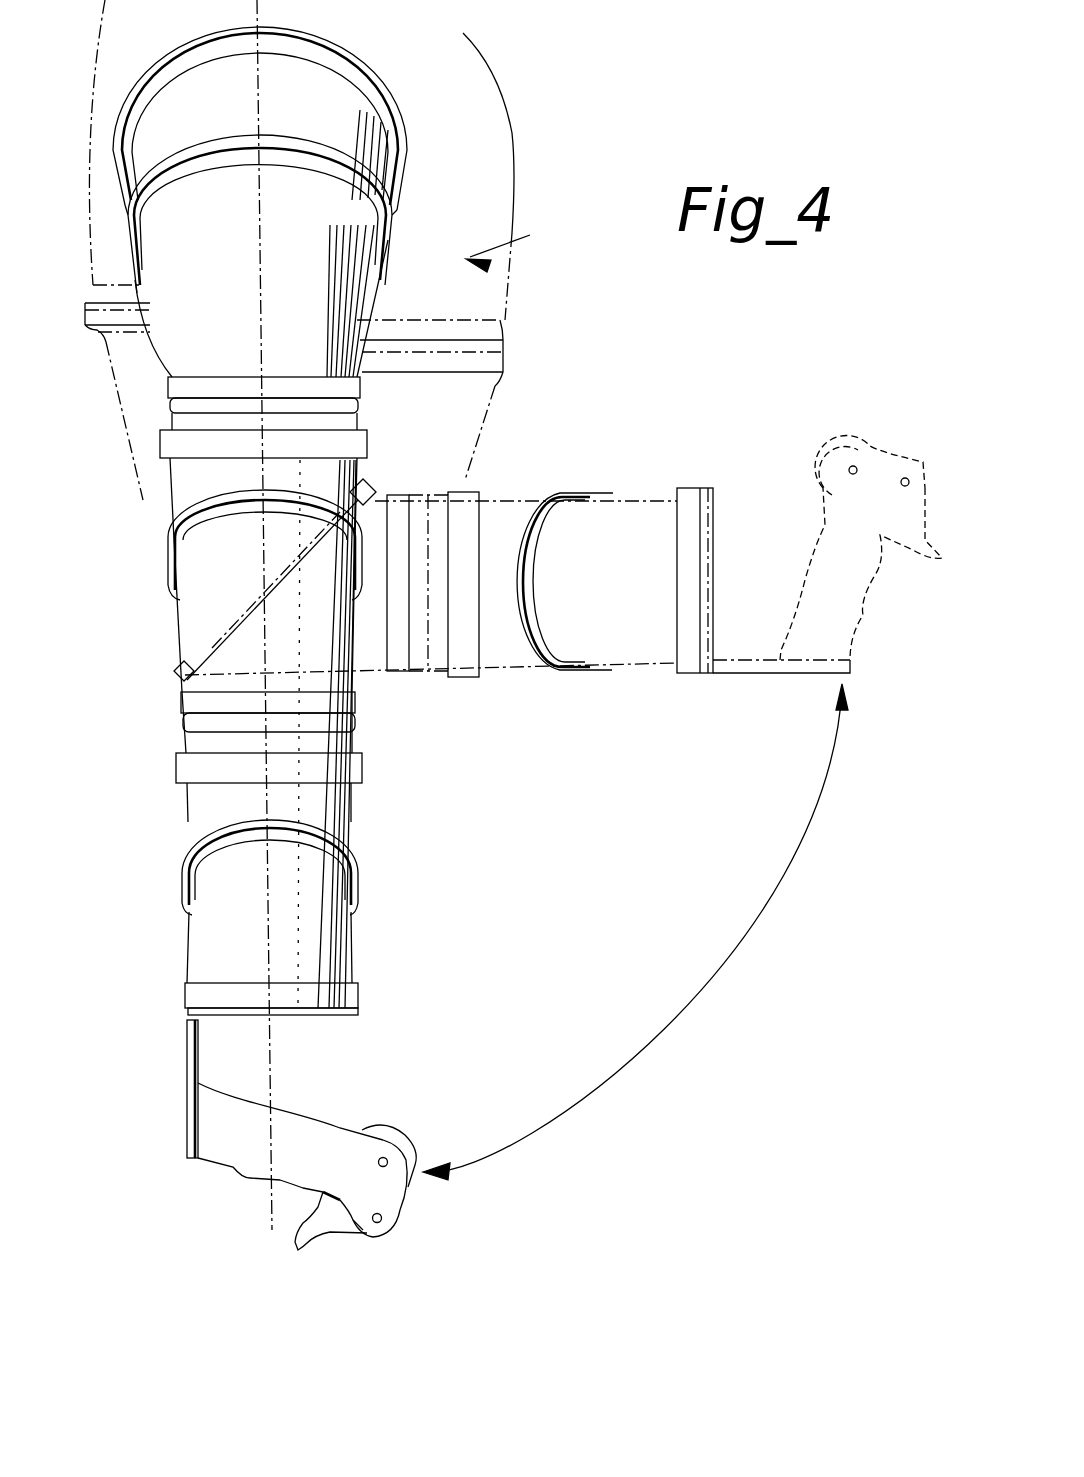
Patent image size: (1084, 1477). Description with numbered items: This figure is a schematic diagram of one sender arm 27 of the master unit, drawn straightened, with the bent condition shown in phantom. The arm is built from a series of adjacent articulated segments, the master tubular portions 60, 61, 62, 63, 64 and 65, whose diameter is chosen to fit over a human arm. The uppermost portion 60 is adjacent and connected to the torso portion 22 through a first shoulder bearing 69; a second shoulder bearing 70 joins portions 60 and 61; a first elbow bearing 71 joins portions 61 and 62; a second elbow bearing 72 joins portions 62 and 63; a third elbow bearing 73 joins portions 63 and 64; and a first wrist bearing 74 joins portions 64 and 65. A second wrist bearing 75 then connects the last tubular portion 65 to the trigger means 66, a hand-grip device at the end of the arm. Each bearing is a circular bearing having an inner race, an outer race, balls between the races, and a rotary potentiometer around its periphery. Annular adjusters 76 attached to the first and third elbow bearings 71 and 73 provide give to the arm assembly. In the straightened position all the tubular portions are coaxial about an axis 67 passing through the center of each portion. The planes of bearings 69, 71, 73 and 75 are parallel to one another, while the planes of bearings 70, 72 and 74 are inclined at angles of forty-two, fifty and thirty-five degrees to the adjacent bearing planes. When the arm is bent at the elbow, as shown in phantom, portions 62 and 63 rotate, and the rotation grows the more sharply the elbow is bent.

The torso portion 22 is at (497, 86).
The sender arm 27 is at (516, 241).
The master tubular portion 60 is at (274, 115).
The master tubular portion 61 is at (300, 262).
The master tubular portion 62 is at (208, 492).
The master tubular portion 63 is at (200, 574).
The master tubular portion 64 is at (195, 814).
The master tubular portion 65 is at (212, 927).
The trigger means 66 is at (323, 1123).
The axis 67 is at (262, 7).
The first shoulder bearing 69 is at (372, 90).
The second shoulder bearing 70 is at (382, 228).
The first elbow bearing 71 is at (362, 447).
The second elbow bearing 72 is at (210, 633).
The third elbow bearing 73 is at (178, 773).
The first wrist bearing 74 is at (182, 880).
The second wrist bearing 75 is at (360, 997).
The annular adjuster 76 is at (170, 406).